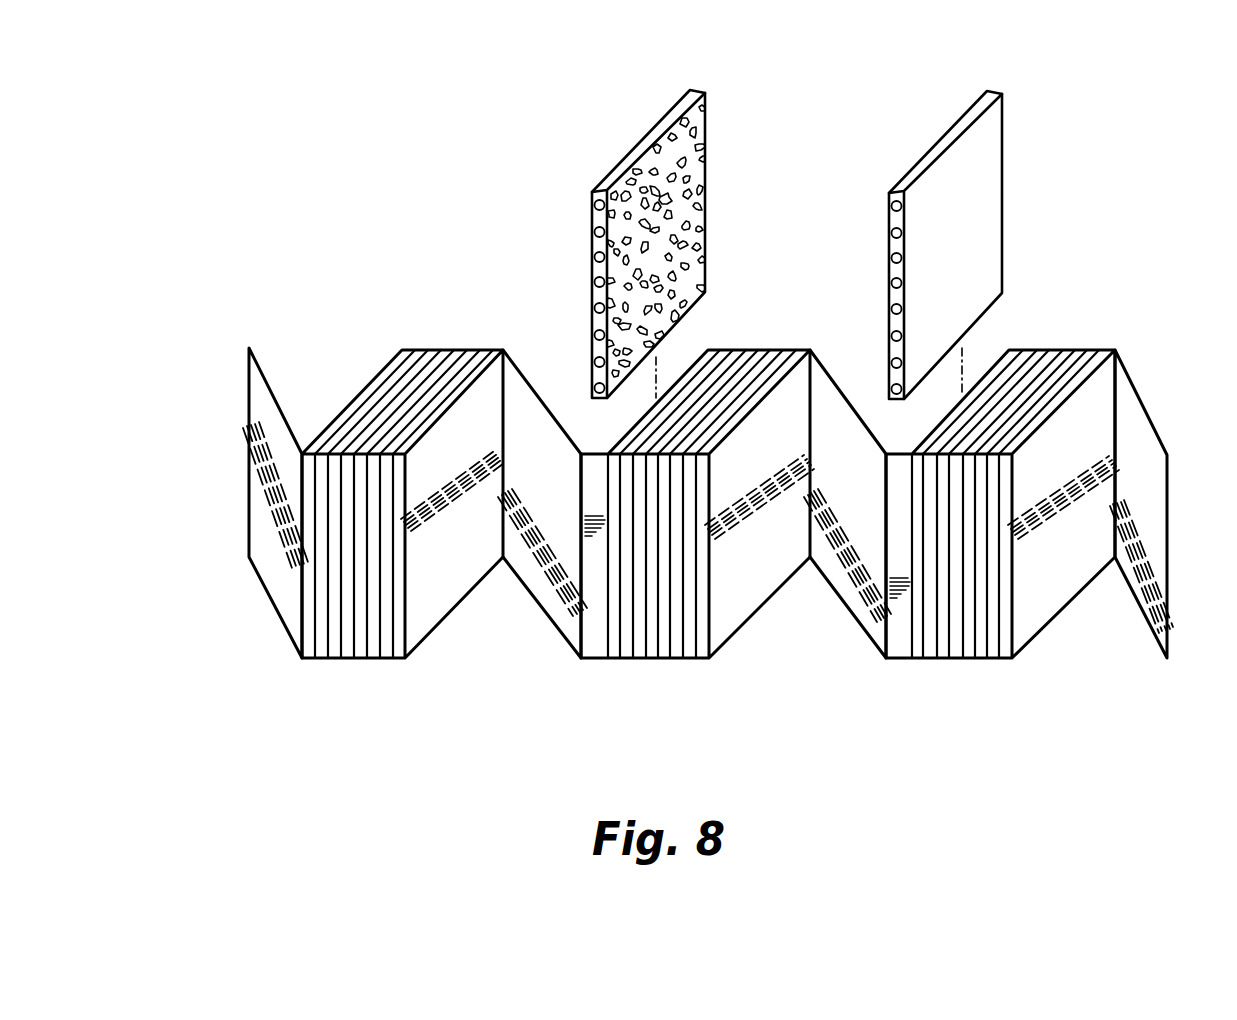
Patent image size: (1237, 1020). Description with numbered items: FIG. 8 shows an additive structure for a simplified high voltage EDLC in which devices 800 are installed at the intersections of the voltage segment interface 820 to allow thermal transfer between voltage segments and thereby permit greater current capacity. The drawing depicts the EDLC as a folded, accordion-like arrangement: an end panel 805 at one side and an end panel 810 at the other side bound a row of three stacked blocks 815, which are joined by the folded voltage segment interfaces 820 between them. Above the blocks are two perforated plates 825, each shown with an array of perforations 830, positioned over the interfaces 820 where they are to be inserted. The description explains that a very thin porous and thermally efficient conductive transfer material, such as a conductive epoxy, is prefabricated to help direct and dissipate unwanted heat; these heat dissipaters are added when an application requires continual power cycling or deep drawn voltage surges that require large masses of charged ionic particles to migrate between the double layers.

The devices 800 is at (373, 142).
The left end panel 805 is at (247, 377).
The right end panel 810 is at (1157, 428).
The stacked electrode blocks 815 is at (360, 662).
The voltage segment interface 820 is at (537, 368).
The perforated plate 825 is at (723, 93).
The perforations 830 is at (731, 269).